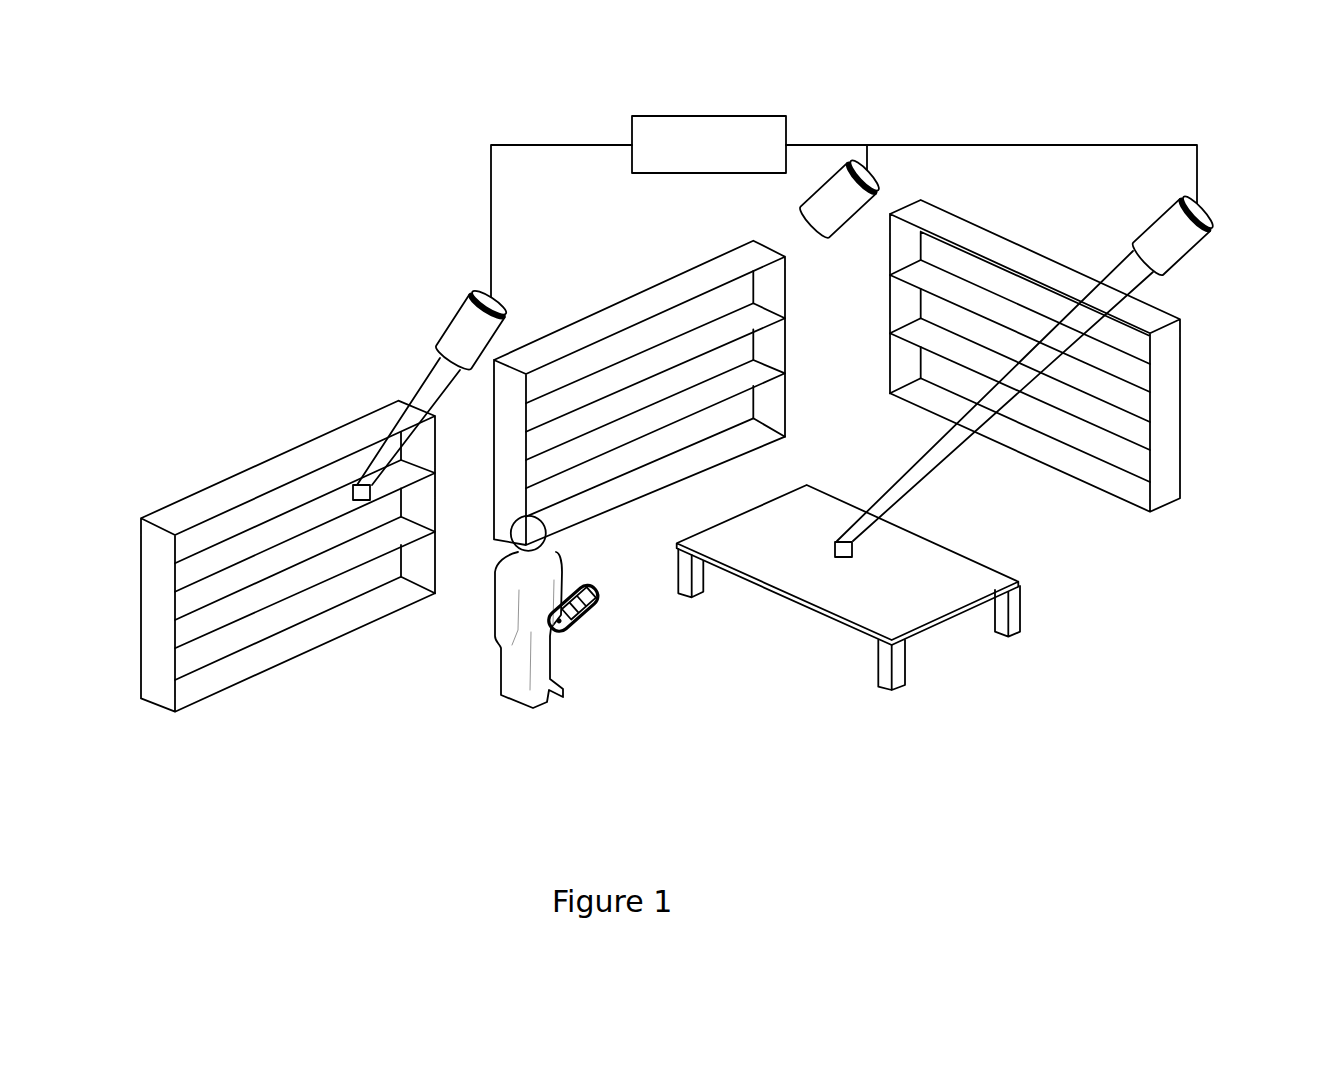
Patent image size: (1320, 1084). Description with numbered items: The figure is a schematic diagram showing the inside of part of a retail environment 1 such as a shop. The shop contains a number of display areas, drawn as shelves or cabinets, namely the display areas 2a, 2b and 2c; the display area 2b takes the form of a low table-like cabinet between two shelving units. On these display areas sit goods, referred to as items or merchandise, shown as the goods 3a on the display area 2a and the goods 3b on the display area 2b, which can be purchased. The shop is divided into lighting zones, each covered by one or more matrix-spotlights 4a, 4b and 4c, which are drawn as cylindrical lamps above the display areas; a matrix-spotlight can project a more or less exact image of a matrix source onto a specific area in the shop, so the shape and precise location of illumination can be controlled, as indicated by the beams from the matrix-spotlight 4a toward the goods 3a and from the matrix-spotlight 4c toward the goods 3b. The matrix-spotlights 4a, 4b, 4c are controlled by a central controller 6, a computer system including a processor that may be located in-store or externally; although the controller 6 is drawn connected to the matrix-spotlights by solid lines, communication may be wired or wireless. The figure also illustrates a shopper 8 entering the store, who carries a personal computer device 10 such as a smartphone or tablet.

The retail environment 1 is at (325, 299).
The display area 2a is at (190, 494).
The display area 2b is at (823, 491).
The display area 2c is at (992, 231).
The goods 3a is at (353, 497).
The goods 3b is at (852, 551).
The matrix-spotlight 4a is at (467, 303).
The matrix-spotlight 4b is at (879, 172).
The matrix-spotlight 4c is at (1202, 210).
The central controller 6 is at (767, 116).
The shopper 8 is at (494, 642).
The personal computer device 10 is at (600, 615).